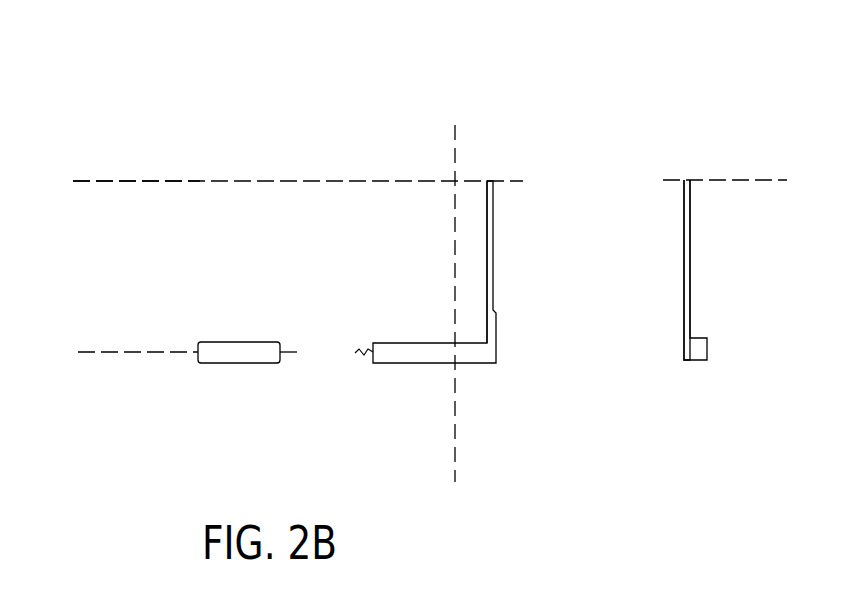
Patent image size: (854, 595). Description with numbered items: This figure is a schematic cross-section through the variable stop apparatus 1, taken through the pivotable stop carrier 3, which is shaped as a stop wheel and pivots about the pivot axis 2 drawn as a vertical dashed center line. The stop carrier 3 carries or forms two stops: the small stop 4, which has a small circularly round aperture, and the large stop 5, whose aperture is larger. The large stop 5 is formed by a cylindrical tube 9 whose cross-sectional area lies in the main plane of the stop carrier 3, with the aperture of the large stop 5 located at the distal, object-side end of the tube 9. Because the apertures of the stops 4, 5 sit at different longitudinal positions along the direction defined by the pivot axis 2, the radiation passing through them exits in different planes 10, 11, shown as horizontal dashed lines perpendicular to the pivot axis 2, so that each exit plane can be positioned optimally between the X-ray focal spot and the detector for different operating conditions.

The variable stop apparatus 1 is at (226, 168).
The pivot axis 2 is at (458, 450).
The stop carrier 3 is at (217, 363).
The small stop 4 is at (331, 366).
The large stop 5 is at (606, 164).
The tube 9 is at (690, 262).
The plane 10 is at (112, 353).
The plane 11 is at (113, 181).